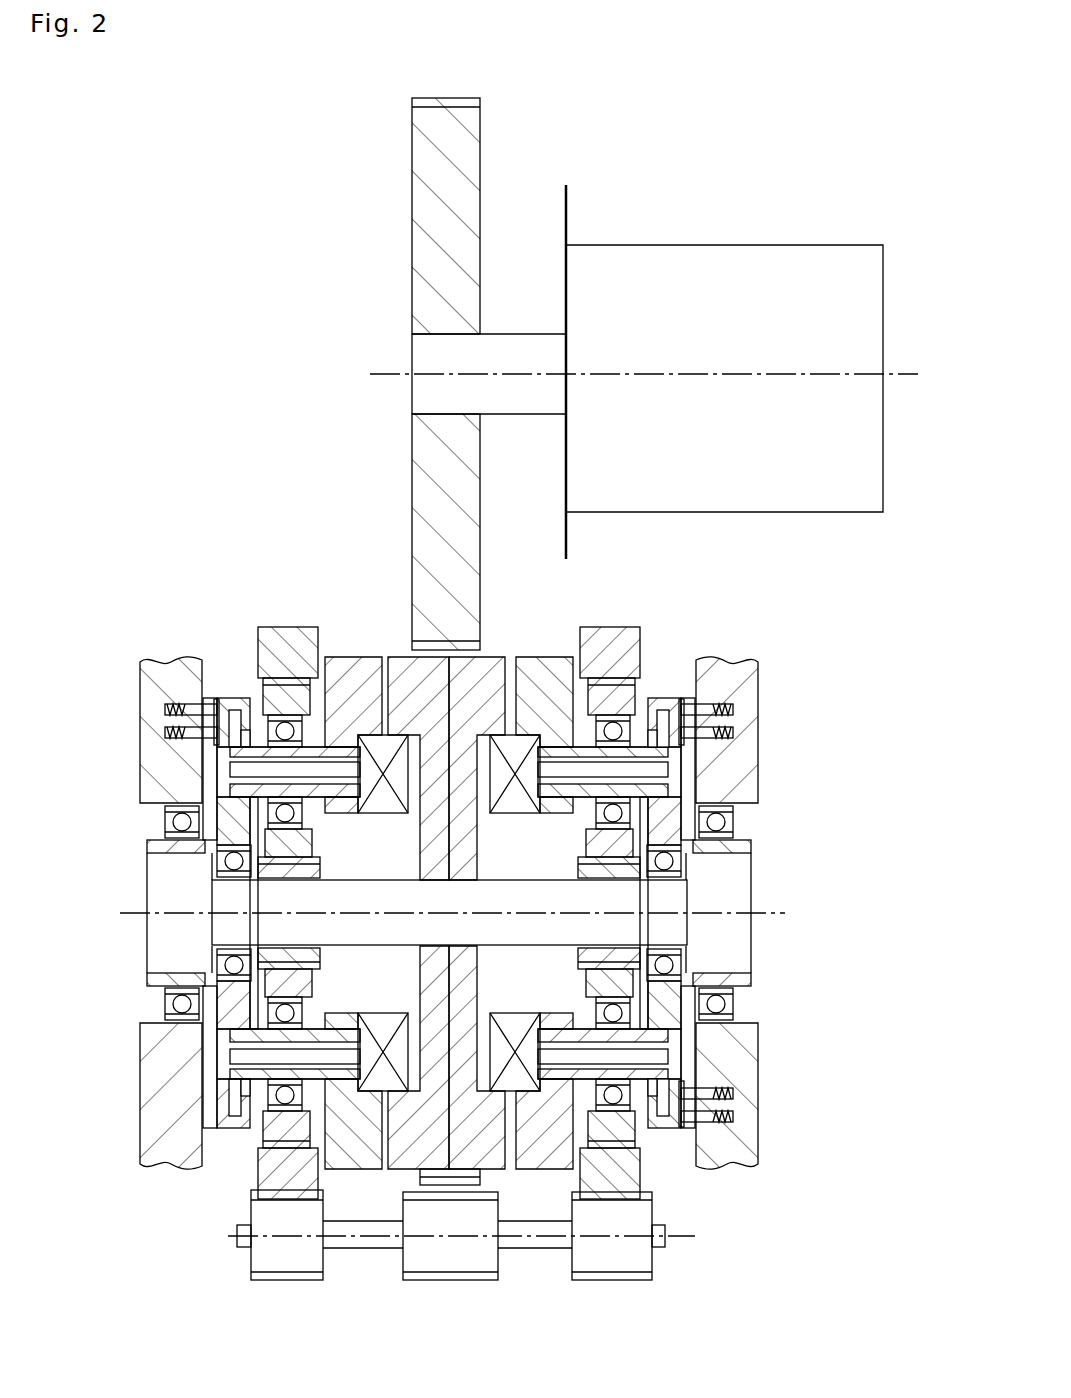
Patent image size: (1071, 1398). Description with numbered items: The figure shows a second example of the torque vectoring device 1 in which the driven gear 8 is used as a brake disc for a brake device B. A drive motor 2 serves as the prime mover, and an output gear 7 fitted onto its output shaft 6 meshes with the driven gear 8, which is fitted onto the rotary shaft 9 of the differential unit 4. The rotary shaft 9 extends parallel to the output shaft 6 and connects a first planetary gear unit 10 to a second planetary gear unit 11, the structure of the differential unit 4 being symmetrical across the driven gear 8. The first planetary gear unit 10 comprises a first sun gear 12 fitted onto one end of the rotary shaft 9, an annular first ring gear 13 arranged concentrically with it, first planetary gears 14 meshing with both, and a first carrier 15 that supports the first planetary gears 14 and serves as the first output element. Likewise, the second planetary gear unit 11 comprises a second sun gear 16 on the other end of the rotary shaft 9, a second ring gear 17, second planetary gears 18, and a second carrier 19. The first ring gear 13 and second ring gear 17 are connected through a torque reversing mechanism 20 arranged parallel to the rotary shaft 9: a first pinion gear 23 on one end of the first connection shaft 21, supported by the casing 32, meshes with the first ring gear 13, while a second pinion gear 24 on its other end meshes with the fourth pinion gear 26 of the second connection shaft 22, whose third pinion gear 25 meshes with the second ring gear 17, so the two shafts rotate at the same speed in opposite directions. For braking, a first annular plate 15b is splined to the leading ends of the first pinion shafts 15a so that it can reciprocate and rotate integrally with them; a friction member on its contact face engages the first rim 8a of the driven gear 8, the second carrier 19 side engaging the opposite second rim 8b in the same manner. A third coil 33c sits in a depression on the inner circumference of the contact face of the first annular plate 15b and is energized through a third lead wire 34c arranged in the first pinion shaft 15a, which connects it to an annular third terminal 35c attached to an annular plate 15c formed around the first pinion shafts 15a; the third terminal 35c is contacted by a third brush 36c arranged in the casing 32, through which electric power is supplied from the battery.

The torque vectoring device 1 is at (703, 147).
The drive motor 2 is at (787, 262).
The differential unit 4 is at (352, 572).
The output shaft 6 is at (516, 345).
The output gear 7 is at (468, 150).
The driven gear 8 is at (450, 866).
The first rim 8a is at (497, 662).
The second rim 8b is at (397, 662).
The rotary shaft 9 is at (512, 880).
The first planetary gear unit 10 is at (660, 792).
The second planetary gear unit 11 is at (286, 772).
The first sun gear 12 is at (578, 868).
The first ring gear 13 is at (610, 640).
The first planetary gears 14 is at (622, 695).
The first carrier 15 is at (676, 717).
The first pinion shafts 15a is at (673, 1052).
The first annular plate 15b is at (560, 1130).
The annular plate 15c is at (663, 1098).
The second sun gear 16 is at (310, 868).
The second ring gear 17 is at (288, 640).
The second planetary gears 18 is at (268, 690).
The second carrier 19 is at (217, 703).
The torque reversing mechanism 20 is at (485, 1267).
The first connection shaft 21 is at (537, 1248).
The second connection shaft 22 is at (345, 1250).
The first pinion gear 23 is at (612, 1280).
The second pinion gear 24 is at (450, 1268).
The third pinion gear 25 is at (283, 1280).
The fourth pinion gear 26 is at (447, 1265).
The casing 32 is at (752, 680).
The third coil 33c is at (513, 1020).
The third lead wire 34c is at (556, 750).
The third terminal 35c is at (700, 712).
The third brush 36c is at (700, 735).
The brake device B is at (405, 1176).